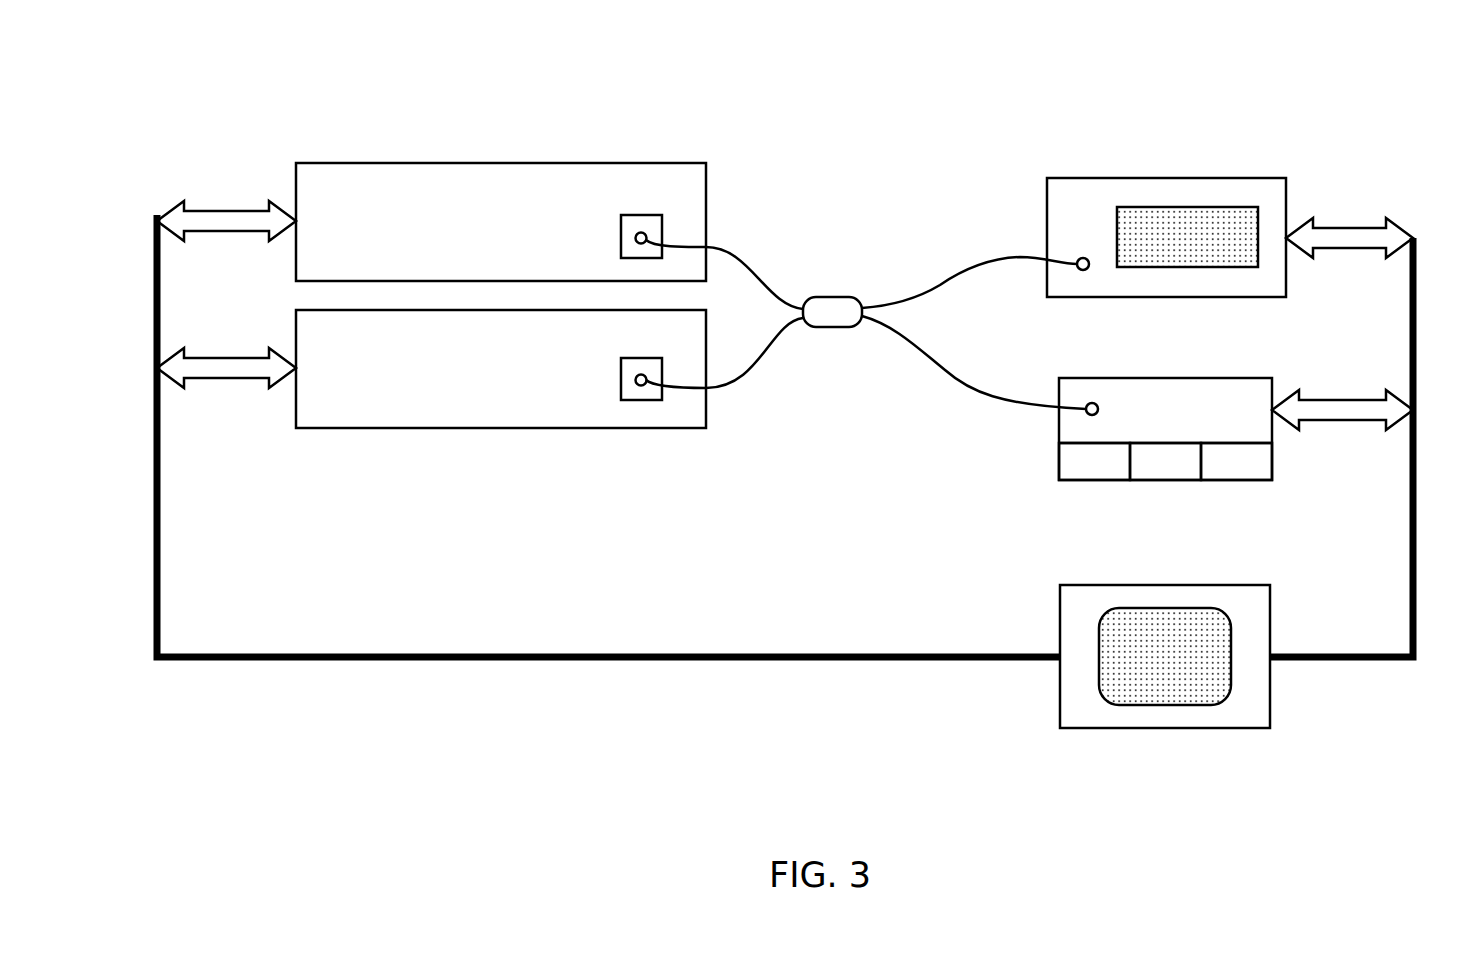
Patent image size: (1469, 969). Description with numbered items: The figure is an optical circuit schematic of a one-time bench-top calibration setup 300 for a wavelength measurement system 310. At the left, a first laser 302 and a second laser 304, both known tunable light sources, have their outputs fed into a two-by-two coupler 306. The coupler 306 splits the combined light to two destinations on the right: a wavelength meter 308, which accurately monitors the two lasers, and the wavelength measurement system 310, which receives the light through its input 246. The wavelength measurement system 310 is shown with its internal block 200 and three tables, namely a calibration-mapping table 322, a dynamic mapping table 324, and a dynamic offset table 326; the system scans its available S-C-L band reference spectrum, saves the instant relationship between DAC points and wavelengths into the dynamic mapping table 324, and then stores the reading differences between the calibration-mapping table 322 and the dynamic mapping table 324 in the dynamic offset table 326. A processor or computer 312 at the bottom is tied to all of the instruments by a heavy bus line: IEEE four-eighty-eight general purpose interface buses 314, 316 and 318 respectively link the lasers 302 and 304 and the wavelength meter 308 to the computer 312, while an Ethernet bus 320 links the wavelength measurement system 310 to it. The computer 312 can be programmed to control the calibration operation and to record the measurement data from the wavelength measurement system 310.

The calibration setup 300 is at (168, 43).
The first laser 302 is at (352, 430).
The second laser 304 is at (352, 162).
The 2×2 coupler 306 is at (848, 296).
The wavelength meter 308 is at (1087, 178).
The wavelength measurement system 310 is at (1142, 404).
The computer 312 is at (1082, 583).
The GPIB 314 is at (247, 357).
The GPIB 316 is at (236, 210).
The GPIB 318 is at (1357, 227).
The Ethernet bus 320 is at (1322, 398).
The calibration-mapping table 322 is at (1115, 471).
The dynamic mapping table 324 is at (1186, 471).
The dynamic offset table 326 is at (1257, 471).
The controller 200 is at (1185, 422).
The input 246 is at (1048, 412).